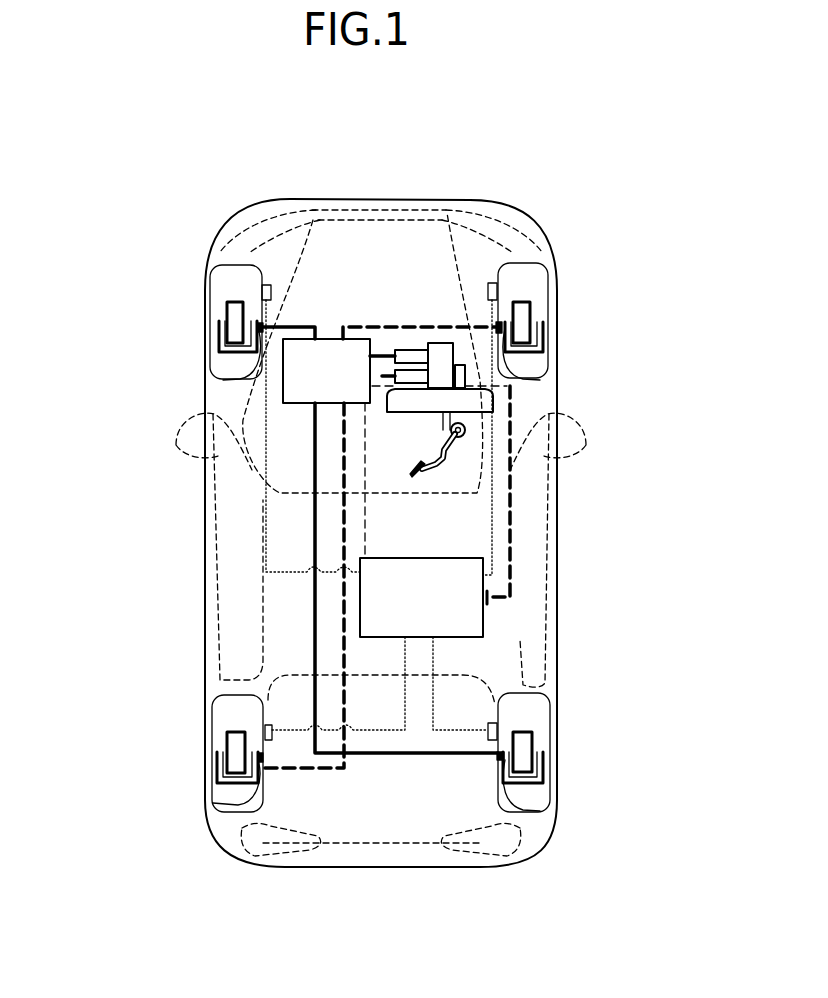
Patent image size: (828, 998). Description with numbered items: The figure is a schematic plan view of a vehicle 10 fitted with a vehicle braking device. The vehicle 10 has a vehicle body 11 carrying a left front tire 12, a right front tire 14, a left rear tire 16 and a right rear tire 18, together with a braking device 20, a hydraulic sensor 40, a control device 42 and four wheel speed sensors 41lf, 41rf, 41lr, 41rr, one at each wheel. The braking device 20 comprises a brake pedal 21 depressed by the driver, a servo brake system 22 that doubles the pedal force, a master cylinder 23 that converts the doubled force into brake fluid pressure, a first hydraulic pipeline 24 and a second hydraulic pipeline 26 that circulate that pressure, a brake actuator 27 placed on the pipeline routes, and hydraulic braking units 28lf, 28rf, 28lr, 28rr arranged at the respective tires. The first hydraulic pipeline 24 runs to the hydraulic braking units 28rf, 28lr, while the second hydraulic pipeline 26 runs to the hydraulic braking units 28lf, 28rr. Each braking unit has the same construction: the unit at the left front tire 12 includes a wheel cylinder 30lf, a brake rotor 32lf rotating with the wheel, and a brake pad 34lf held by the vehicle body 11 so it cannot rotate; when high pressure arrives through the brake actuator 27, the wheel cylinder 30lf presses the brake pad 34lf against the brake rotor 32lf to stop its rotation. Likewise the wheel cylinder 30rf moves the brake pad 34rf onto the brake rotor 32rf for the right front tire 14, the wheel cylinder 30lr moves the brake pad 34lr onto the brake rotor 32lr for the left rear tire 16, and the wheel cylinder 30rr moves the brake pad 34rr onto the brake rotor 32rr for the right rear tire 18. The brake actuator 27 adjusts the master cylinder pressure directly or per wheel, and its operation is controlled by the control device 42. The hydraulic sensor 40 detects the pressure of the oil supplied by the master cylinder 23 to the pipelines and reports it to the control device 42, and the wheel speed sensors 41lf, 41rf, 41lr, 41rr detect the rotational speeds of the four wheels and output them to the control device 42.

The vehicle 10 is at (366, 487).
The vehicle body 11 is at (484, 200).
The left front tire 12 is at (228, 284).
The right front tire 14 is at (532, 280).
The left rear tire 16 is at (230, 708).
The right rear tire 18 is at (532, 708).
The braking device 20 is at (290, 515).
The brake pedal 21 is at (450, 453).
The servo brake system 22 is at (505, 407).
The master cylinder 23 is at (440, 343).
The first hydraulic pipeline 24 is at (343, 517).
The second hydraulic pipeline 26 is at (311, 465).
The brake actuator 27 is at (330, 339).
The hydraulic braking unit 28lf is at (162, 353).
The hydraulic braking unit 28rf is at (602, 353).
The hydraulic braking unit 28lr is at (162, 783).
The hydraulic braking unit 28rr is at (602, 783).
The wheel cylinder 30lf is at (223, 380).
The wheel cylinder 30rf is at (574, 364).
The wheel cylinder 30lr is at (191, 796).
The wheel cylinder 30rr is at (574, 796).
The brake rotor 32lf is at (228, 308).
The brake rotor 32rf is at (530, 308).
The brake rotor 32lr is at (227, 737).
The brake rotor 32rr is at (532, 737).
The brake pad 34lf is at (218, 338).
The brake pad 34rf is at (540, 340).
The brake pad 34lr is at (220, 772).
The brake pad 34rr is at (542, 768).
The hydraulic sensor 40 is at (460, 365).
The wheel speed sensor 41lf is at (267, 284).
The wheel speed sensor 41rf is at (493, 283).
The wheel speed sensor 41lr is at (268, 740).
The wheel speed sensor 41rr is at (492, 740).
The control device 42 is at (487, 610).